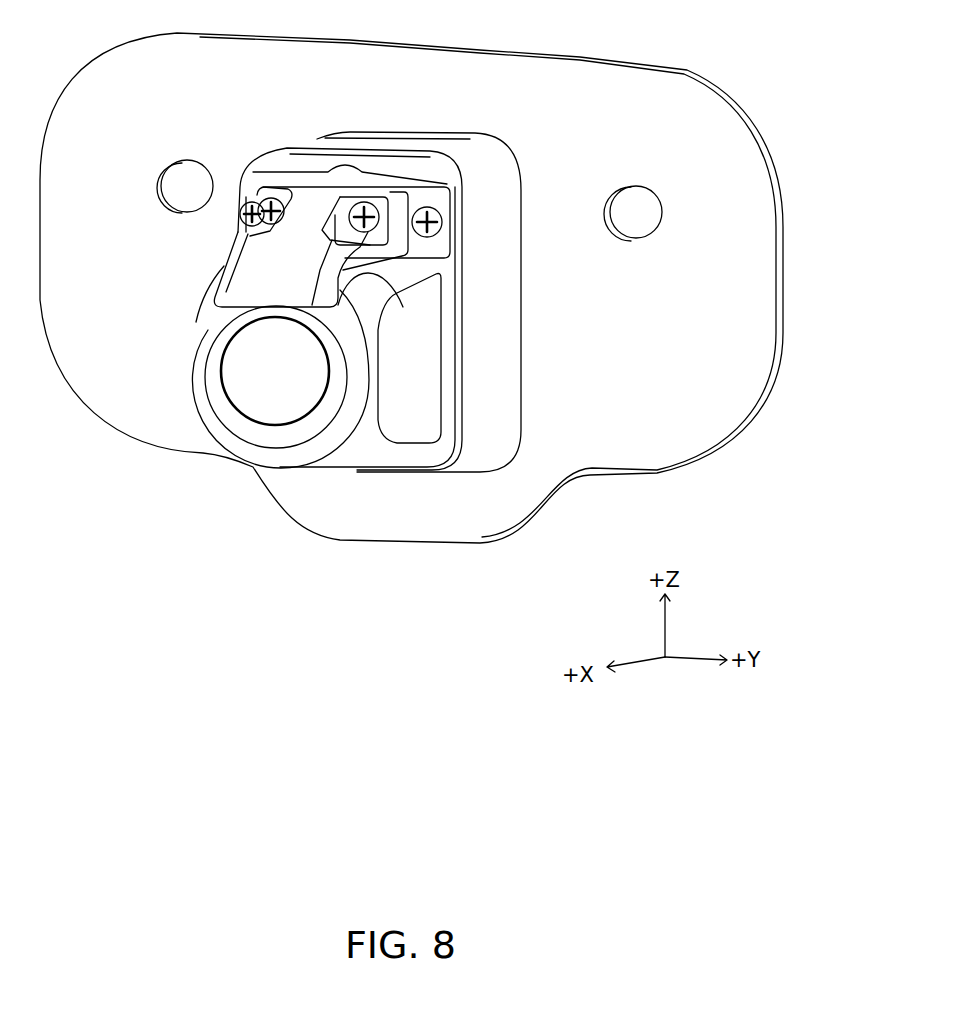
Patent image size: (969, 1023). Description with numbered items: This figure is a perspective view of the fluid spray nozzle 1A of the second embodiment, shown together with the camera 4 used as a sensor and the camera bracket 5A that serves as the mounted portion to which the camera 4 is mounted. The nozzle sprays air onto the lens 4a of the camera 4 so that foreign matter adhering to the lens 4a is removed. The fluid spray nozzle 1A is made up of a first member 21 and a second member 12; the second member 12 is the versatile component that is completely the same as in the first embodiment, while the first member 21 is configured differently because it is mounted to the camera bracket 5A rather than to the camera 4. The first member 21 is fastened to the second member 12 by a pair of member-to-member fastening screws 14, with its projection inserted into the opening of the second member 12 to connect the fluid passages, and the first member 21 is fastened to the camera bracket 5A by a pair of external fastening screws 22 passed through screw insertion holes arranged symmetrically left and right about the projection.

The camera bracket 5A is at (657, 87).
The fluid spray nozzle 1A is at (208, 241).
The camera 4 is at (357, 446).
The lens 4a is at (258, 398).
The second member 12 is at (230, 256).
The member-to-member fastening screws 14 is at (360, 206).
The first member 21 is at (424, 188).
The external fastening screws 22 is at (251, 201).